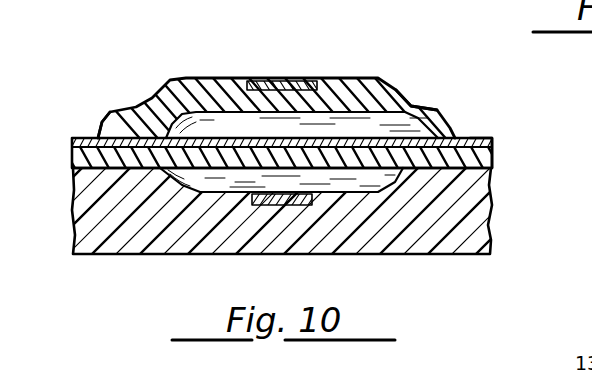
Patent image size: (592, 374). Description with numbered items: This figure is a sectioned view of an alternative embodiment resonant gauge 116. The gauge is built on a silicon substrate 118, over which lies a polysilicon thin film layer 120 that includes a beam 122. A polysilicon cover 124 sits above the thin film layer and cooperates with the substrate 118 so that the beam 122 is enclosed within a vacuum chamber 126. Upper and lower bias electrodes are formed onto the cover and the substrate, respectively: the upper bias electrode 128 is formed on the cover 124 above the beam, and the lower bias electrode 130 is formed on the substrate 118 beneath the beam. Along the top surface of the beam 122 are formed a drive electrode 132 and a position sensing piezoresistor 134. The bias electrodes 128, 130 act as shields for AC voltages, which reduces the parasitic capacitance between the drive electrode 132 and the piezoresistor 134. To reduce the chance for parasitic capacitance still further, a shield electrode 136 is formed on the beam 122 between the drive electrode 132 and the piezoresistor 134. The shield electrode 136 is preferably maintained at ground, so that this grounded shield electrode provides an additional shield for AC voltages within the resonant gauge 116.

The resonant gauge 116 is at (290, 131).
The silicon substrate 118 is at (487, 205).
The polysilicon thin film layer 120 is at (490, 152).
The beam 122 is at (282, 169).
The polysilicon cover 124 is at (345, 87).
The vacuum chamber 126 is at (392, 108).
The upper bias electrode 128 is at (285, 80).
The lower bias electrode 130 is at (293, 208).
The drive electrode 132 is at (478, 138).
The position sensing piezoresistor 134 is at (92, 136).
The shield electrode 136 is at (287, 137).